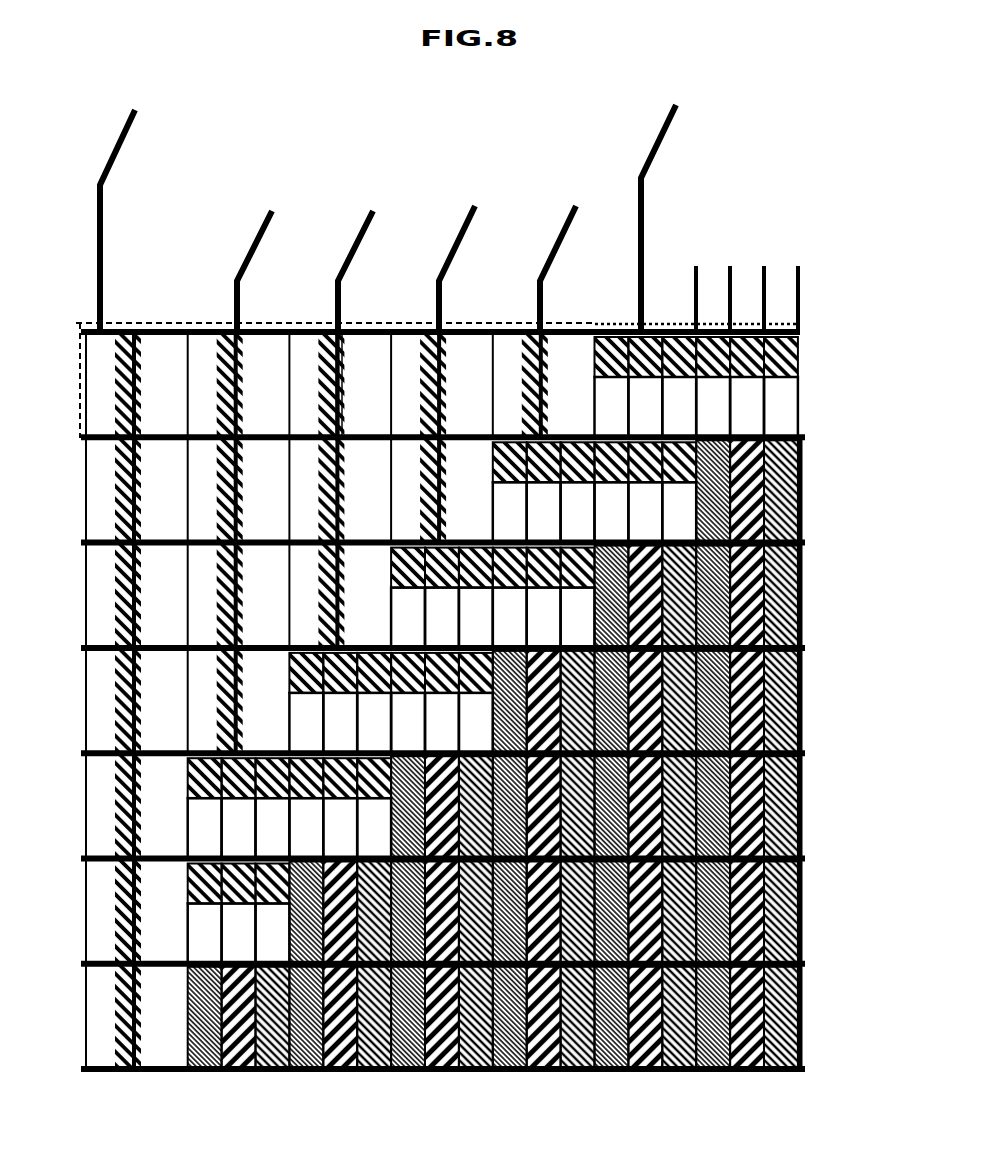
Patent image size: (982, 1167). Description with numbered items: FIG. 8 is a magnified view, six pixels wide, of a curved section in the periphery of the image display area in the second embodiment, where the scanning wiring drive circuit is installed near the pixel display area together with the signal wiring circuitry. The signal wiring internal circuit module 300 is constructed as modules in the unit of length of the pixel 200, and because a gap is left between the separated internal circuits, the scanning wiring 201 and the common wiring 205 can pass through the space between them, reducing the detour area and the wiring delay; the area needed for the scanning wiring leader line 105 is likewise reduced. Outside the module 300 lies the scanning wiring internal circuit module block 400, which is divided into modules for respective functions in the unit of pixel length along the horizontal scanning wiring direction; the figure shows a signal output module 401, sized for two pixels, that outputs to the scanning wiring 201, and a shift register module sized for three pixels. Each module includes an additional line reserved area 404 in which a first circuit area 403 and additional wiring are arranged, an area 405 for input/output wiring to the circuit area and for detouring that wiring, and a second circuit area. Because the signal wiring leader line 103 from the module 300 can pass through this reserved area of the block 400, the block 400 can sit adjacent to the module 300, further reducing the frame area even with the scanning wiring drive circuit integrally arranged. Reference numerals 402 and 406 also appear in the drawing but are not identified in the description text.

The signal wiring leader line 103 is at (554, 207).
The scanning wiring leader line 105 is at (113, 137).
The pixel 200 is at (795, 712).
The scanning wiring 201 is at (796, 948).
The common wiring 205 is at (796, 978).
The signal wiring internal circuit module 300 is at (791, 320).
The scanning wiring internal circuit module block 400 is at (225, 322).
The signal output module 401 is at (585, 312).
The contact plug 402 is at (222, 288).
The first circuit area 403 is at (356, 320).
The additional line reserved area 404 is at (330, 318).
The area for input/output wiring 405 is at (325, 327).
The hatched layer 406 is at (295, 325).